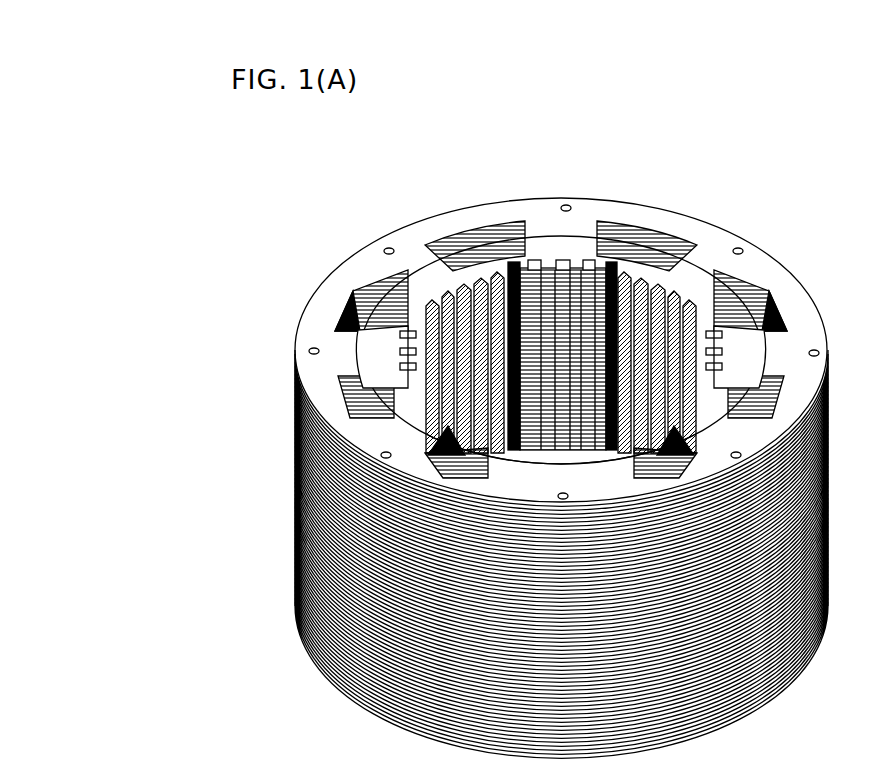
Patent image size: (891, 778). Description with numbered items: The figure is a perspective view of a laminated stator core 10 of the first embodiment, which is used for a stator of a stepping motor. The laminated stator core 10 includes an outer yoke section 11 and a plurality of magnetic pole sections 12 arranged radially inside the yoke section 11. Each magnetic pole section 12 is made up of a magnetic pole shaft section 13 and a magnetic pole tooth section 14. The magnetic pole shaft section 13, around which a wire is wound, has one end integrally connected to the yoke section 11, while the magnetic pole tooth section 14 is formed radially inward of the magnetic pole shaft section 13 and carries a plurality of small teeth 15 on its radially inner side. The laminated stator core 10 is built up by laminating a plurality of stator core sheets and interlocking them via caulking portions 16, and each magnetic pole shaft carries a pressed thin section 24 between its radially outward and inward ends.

The laminated stator core 10 is at (737, 201).
The yoke section 11 is at (537, 246).
The magnetic pole section 12 is at (694, 100).
The magnetic pole shaft section 13 is at (582, 212).
The magnetic pole tooth section 14 is at (548, 205).
The small teeth 15 is at (438, 288).
The caulking portion 16 is at (812, 346).
The thin section 24 is at (694, 272).